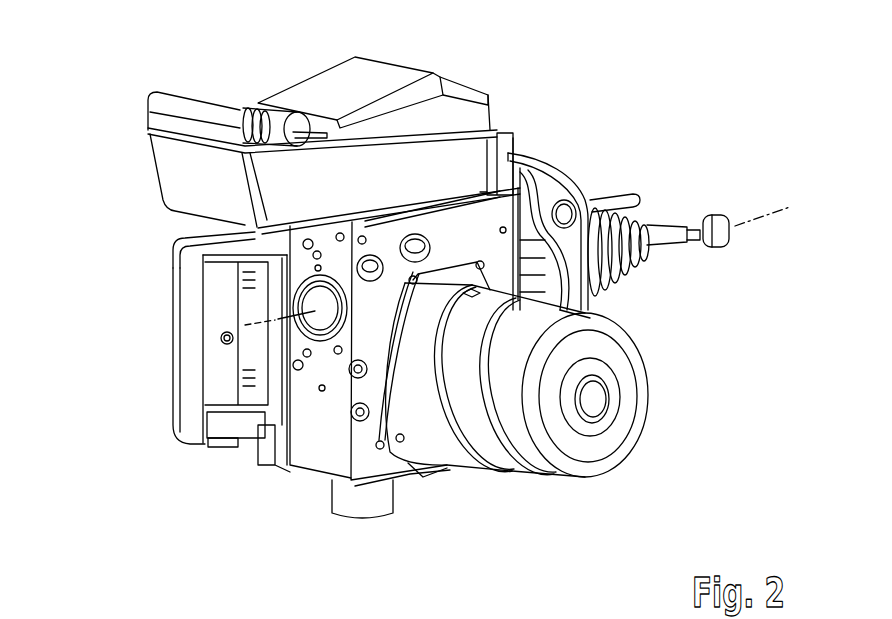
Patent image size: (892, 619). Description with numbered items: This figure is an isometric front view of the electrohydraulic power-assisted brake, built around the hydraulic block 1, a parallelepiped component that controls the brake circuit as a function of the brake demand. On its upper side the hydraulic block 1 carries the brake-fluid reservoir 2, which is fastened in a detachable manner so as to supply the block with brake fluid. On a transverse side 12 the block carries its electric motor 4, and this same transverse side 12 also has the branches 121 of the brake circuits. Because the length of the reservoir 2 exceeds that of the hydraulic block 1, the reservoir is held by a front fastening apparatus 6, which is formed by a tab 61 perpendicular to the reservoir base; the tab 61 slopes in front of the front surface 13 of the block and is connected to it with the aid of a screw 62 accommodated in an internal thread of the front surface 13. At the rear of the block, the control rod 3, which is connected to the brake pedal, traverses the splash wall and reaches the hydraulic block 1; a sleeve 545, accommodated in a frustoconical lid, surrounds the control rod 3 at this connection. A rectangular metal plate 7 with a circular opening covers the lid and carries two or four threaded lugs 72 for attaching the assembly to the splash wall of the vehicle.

The hydraulic block 1 is at (458, 231).
The reservoir 2 is at (397, 73).
The control rod 3 is at (665, 228).
The electric motor 4 is at (607, 443).
The front fastening apparatus 6 is at (175, 347).
The plate 7 is at (540, 177).
The transverse side 12 is at (413, 470).
The front surface 13 is at (333, 468).
The tab 61 is at (263, 265).
The screw 62 is at (250, 233).
The threaded lugs 72 is at (612, 202).
The branches of the brake circuits 121 is at (350, 380).
The sleeve 545 is at (630, 280).